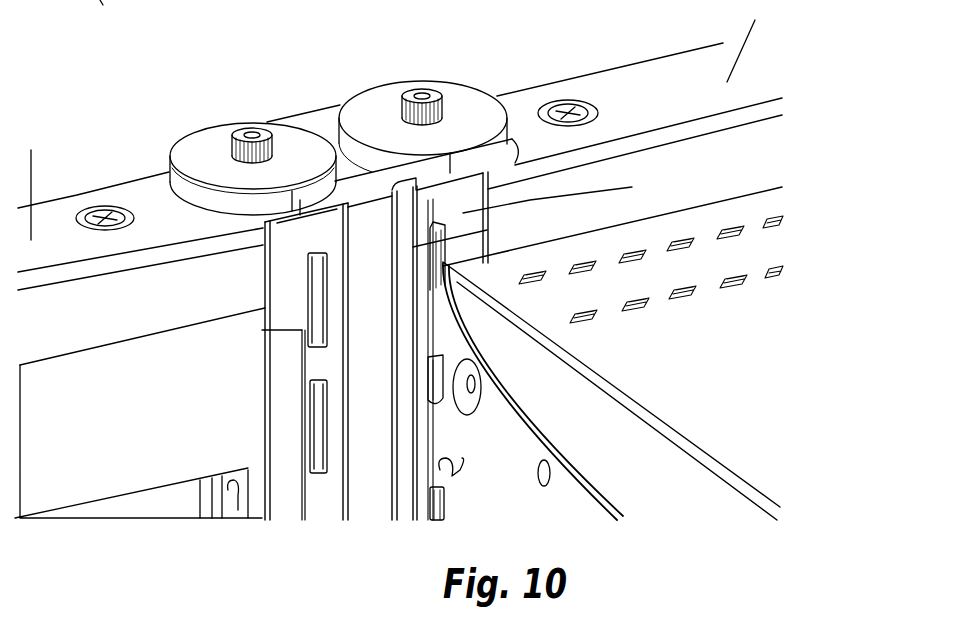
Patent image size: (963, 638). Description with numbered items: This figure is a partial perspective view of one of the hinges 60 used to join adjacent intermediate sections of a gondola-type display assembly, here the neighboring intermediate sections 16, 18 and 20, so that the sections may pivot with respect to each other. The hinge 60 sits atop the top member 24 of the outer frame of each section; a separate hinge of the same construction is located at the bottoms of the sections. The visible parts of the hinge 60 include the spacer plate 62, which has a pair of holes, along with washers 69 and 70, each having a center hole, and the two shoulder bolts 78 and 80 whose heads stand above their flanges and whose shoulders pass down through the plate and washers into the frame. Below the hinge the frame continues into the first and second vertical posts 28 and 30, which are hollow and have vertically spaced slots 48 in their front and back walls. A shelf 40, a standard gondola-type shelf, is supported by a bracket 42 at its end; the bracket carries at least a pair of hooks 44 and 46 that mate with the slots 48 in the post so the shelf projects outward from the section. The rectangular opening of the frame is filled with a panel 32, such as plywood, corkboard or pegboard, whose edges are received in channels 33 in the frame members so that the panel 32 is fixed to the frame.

The intermediate section 16 is at (103, 15).
The intermediate section 18 is at (85, 170).
The intermediate section 20 is at (563, 0).
The top member 24 is at (396, 120).
The first vertical post 28 is at (366, 165).
The second vertical post 30 is at (265, 313).
The panel 32 is at (138, 441).
The channels 33 is at (240, 513).
The shelf 40 is at (613, 368).
The bracket 42 is at (533, 391).
The hook 44 is at (433, 268).
The hook 46 is at (435, 410).
The slots 48 is at (312, 296).
The hinge 60 is at (347, 70).
The spacer plate 62 is at (318, 112).
The washer 69 is at (206, 158).
The washer 70 is at (468, 103).
The shoulder bolt 78 is at (250, 128).
The shoulder bolt 80 is at (425, 90).